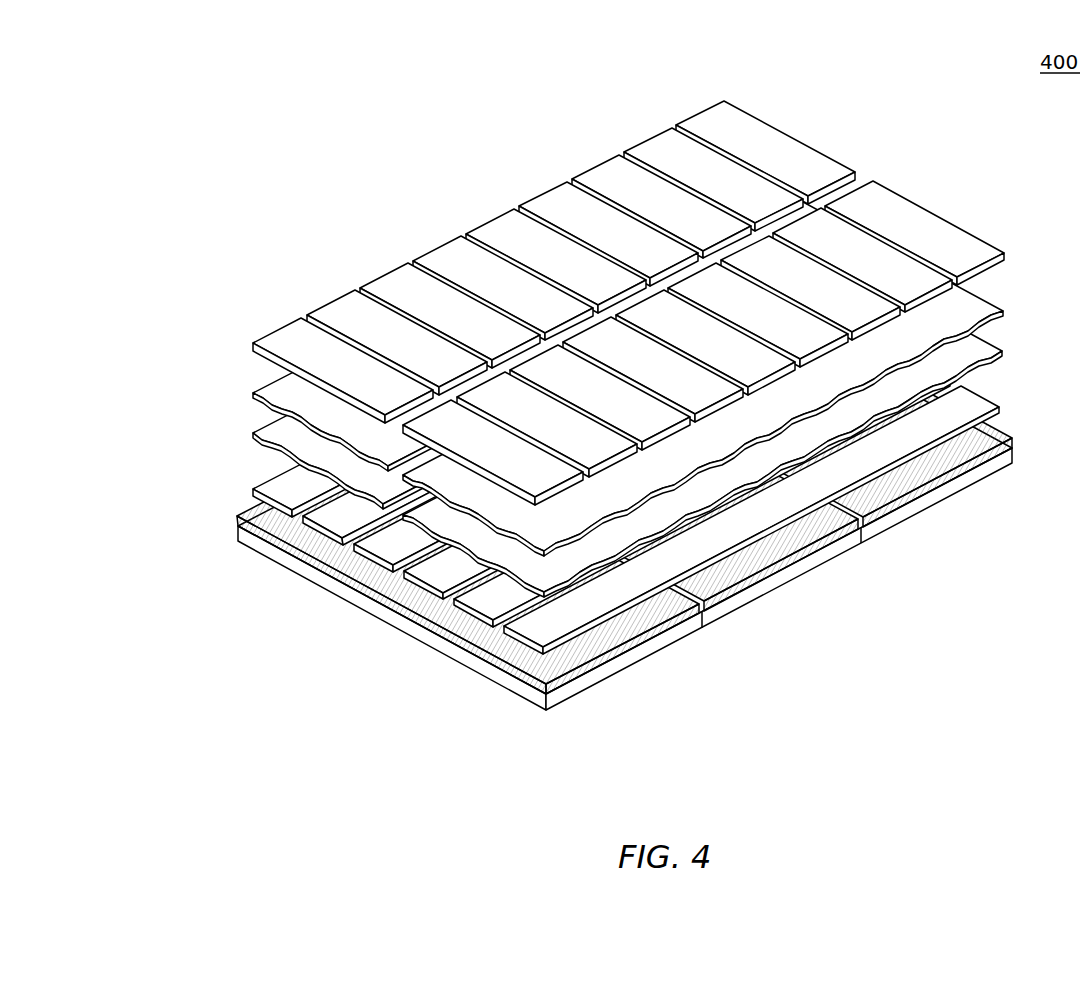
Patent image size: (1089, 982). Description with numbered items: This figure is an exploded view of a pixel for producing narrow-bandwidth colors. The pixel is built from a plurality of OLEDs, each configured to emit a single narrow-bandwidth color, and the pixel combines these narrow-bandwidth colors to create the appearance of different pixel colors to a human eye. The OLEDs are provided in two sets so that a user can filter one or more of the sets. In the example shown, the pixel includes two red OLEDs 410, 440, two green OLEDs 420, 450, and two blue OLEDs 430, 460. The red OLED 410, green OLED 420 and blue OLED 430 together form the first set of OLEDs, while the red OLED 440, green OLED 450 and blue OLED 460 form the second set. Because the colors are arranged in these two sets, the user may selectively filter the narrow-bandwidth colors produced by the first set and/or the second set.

The red OLED 410 is at (323, 301).
The green OLED 420 is at (488, 219).
The blue OLED 430 is at (637, 142).
The red OLED 440 is at (611, 674).
The green OLED 450 is at (779, 589).
The blue OLED 460 is at (932, 509).